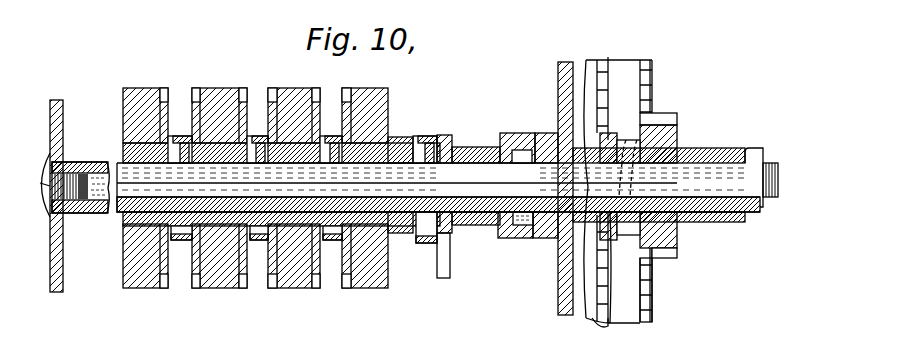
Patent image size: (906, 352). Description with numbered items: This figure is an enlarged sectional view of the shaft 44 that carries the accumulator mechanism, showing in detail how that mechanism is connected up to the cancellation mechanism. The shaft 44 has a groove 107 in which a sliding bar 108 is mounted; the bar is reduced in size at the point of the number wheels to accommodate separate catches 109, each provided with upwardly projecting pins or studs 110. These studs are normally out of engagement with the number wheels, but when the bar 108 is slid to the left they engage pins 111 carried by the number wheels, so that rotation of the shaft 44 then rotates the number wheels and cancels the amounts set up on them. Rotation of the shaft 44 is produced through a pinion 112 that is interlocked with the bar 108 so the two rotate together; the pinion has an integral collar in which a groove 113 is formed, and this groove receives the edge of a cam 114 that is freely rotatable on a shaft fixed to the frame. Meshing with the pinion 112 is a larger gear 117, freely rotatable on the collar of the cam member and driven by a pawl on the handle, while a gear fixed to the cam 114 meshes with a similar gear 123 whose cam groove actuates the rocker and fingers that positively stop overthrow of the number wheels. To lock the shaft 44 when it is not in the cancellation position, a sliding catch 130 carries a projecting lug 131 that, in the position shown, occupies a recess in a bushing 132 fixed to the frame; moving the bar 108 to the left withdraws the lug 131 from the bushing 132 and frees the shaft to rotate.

The shaft 44 is at (424, 214).
The groove 107 is at (777, 192).
The sliding bar 108 is at (713, 170).
The catches 109 is at (430, 134).
The pins or studs 110 is at (433, 140).
The pins 111 is at (420, 172).
The pinion 112 is at (674, 131).
The groove 113 is at (622, 145).
The cam 114 is at (622, 290).
The larger gear 117 is at (652, 272).
The gear 123 is at (603, 322).
The sliding catch 130 is at (485, 182).
The lug 131 is at (538, 160).
The bushing 132 is at (522, 238).